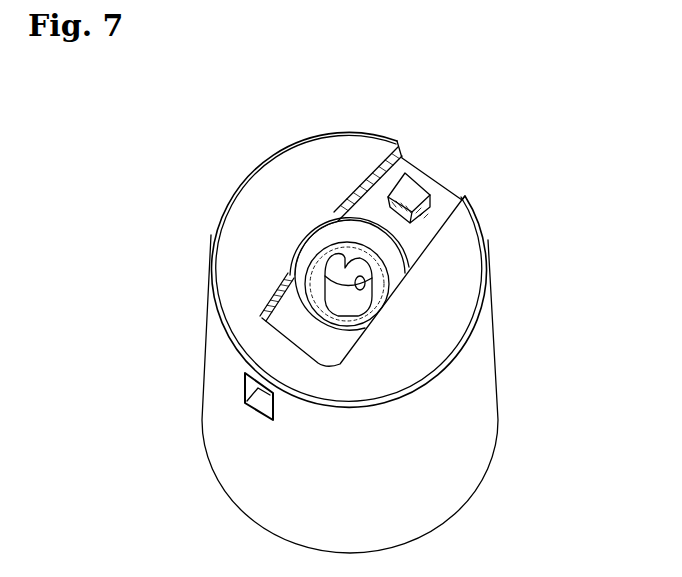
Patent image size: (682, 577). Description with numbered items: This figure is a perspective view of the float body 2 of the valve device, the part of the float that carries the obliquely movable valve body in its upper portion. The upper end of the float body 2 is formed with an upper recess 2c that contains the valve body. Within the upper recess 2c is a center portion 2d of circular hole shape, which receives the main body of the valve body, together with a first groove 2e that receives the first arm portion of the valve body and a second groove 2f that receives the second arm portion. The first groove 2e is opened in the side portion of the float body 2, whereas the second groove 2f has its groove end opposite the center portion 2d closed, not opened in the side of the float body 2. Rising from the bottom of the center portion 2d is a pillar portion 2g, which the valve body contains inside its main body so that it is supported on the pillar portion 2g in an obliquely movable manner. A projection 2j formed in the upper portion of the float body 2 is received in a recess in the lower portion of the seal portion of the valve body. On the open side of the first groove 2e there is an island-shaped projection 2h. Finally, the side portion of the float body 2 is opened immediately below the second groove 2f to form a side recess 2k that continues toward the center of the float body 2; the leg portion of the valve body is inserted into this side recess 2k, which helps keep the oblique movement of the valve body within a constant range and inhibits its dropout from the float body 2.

The float body 2 is at (501, 387).
The upper recess 2c is at (323, 238).
The center portion 2d is at (313, 252).
The first groove 2e is at (362, 184).
The second groove 2f is at (290, 307).
The pillar portion 2g is at (363, 260).
The projection 2j is at (448, 279).
The island-shaped projection 2h is at (413, 188).
The side recess 2k is at (253, 400).